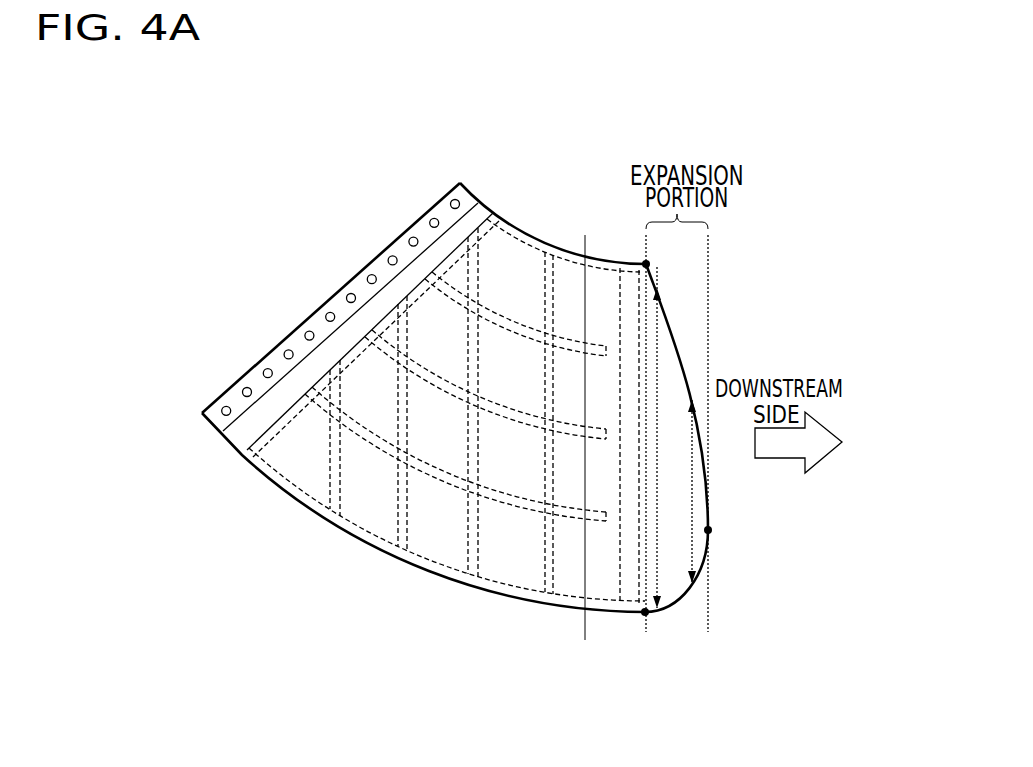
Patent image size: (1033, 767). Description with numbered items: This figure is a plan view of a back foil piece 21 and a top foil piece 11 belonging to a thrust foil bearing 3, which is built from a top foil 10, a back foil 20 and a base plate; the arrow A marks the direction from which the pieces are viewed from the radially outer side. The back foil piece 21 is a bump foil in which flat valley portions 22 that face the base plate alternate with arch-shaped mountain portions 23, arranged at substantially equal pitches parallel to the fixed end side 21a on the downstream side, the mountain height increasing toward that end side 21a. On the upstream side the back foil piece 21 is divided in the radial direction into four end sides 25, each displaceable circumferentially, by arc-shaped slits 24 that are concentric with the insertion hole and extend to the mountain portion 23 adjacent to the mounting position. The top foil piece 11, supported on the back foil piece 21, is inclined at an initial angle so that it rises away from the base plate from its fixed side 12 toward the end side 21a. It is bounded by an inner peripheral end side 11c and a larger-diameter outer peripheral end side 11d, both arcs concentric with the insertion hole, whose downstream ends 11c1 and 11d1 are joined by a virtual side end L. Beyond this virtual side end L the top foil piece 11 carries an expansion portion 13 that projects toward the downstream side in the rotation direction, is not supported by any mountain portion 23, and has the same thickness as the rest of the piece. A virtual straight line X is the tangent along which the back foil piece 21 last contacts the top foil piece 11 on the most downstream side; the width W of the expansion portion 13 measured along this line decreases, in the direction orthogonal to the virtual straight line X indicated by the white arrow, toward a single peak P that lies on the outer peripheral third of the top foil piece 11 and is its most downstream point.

The thrust foil bearing 3 is at (258, 192).
The top foil 10 is at (348, 540).
The top foil piece 11 is at (353, 503).
The end side on the inner peripheral side 11c is at (542, 242).
The downstream end of the inner peripheral end side 11c1 is at (645, 262).
The end side on the outer peripheral side 11d is at (390, 557).
The downstream end of the outer peripheral end side 11d1 is at (646, 612).
The fixed side 12 is at (358, 288).
The expansion portion 13 is at (685, 381).
The back foil 20 is at (373, 545).
The back foil piece 21 is at (418, 572).
The end side 21a is at (631, 528).
The valley portion 22 is at (552, 580).
The mountain portion 23 is at (503, 547).
The slit 24 is at (443, 385).
The end side 25 is at (343, 350).
The virtual straight line X is at (568, 243).
The virtual side end L is at (647, 343).
The width of the expansion portion W is at (657, 485).
The peak P is at (708, 530).
The arrow A is at (278, 513).